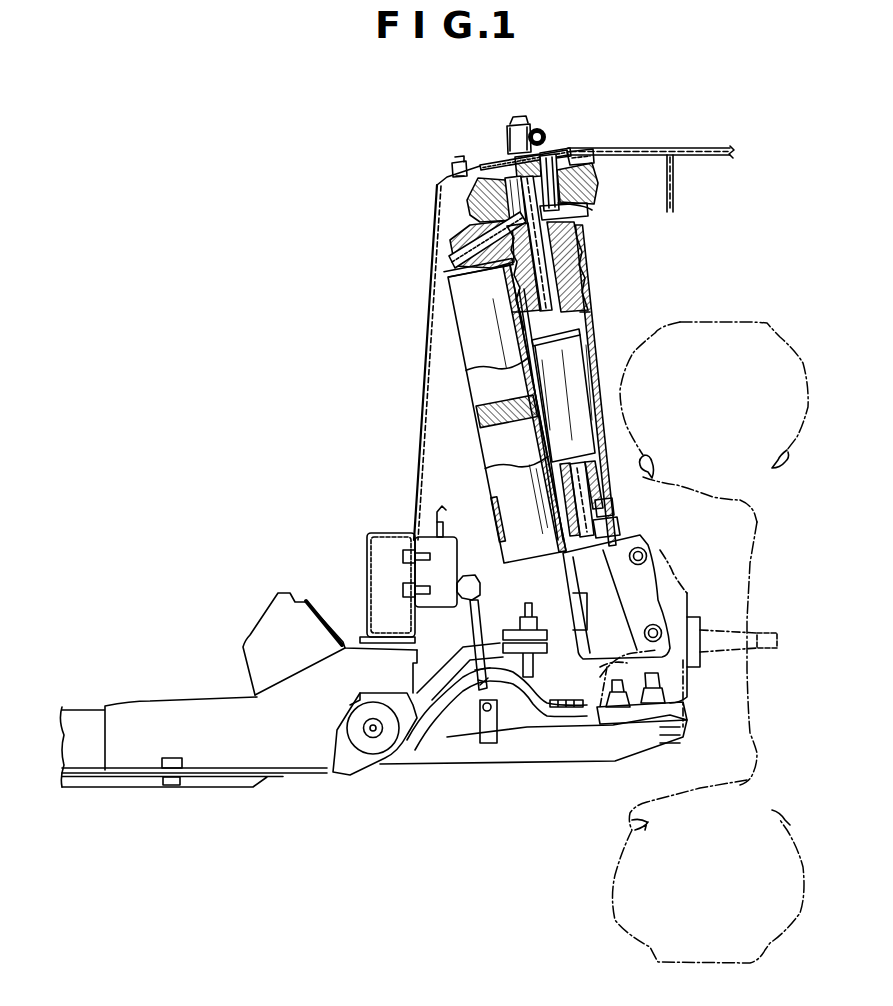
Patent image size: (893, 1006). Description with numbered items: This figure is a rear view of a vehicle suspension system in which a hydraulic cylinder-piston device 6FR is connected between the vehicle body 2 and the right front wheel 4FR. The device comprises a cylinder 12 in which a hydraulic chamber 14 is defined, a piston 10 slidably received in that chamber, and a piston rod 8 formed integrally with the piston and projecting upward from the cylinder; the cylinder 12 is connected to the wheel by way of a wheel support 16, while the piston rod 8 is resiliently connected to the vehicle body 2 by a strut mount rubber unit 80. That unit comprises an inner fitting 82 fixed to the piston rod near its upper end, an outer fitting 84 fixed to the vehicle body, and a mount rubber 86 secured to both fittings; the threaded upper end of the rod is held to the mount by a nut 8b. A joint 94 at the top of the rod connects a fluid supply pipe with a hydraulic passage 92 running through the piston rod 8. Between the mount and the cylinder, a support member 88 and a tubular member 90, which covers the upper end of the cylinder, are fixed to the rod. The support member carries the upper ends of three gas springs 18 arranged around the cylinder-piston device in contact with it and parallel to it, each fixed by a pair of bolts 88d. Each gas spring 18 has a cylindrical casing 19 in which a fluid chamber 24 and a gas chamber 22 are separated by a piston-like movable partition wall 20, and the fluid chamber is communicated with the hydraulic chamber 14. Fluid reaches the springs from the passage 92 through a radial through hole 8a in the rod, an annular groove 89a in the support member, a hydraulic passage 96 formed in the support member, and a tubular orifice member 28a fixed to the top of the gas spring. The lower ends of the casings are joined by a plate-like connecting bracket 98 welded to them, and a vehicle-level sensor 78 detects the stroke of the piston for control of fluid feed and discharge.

The vehicle body 2 is at (667, 146).
The right front wheel 4FR is at (745, 320).
The cylinder-piston device 6FR is at (600, 347).
The piston rod 8 is at (574, 302).
The through hole 8a is at (560, 150).
The nut 8b is at (511, 155).
The piston 10 is at (604, 488).
The cylinder 12 is at (600, 413).
The hydraulic chamber 14 is at (618, 511).
The wheel support 16 is at (690, 596).
The gas spring 18 is at (449, 350).
The casing 19 is at (477, 461).
The movable partition wall 20 is at (483, 408).
The gas chamber 22 is at (500, 443).
The fluid chamber 24 is at (483, 388).
The first orifice member 28a is at (448, 272).
The vehicle-level sensor 78 is at (488, 582).
The strut mount rubber unit 80 is at (583, 139).
The inner fitting 82 is at (584, 215).
The outer fitting 84 is at (596, 181).
The mount rubber 86 is at (592, 203).
The support member 88 is at (446, 189).
The bolt 88d is at (456, 228).
The annular groove 89a is at (549, 231).
The tubular member 90 is at (582, 258).
The hydraulic passage 92 is at (582, 279).
The joint 94 is at (540, 126).
The hydraulic passage 96 is at (452, 239).
The connecting bracket 98 is at (488, 512).